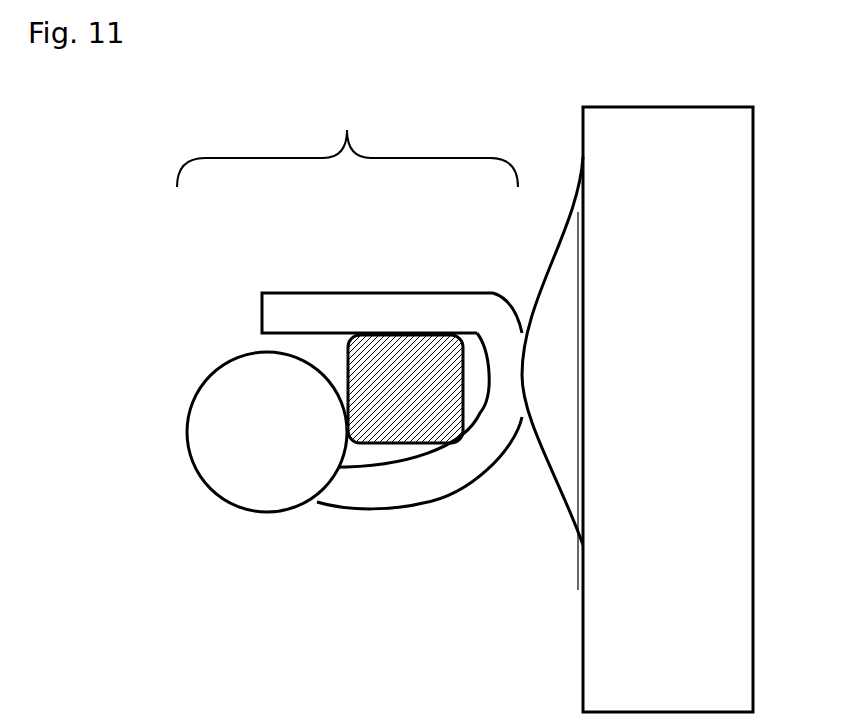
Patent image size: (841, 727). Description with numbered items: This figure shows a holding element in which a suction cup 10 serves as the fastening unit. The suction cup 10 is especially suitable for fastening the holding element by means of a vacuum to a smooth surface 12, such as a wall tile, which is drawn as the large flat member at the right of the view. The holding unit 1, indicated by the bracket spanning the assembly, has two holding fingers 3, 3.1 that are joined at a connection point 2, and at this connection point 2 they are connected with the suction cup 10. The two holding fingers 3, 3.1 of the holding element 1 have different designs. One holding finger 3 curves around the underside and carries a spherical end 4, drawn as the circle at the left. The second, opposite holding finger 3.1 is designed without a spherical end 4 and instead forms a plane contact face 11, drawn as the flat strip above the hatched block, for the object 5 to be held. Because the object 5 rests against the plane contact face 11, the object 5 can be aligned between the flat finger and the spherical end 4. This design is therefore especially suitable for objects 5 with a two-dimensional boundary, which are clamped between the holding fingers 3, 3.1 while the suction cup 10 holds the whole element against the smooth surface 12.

The holding unit 1 is at (347, 142).
The connection point 2 is at (517, 387).
The holding finger 3 is at (435, 480).
The holding finger 3.1 is at (488, 312).
The spherical end 4 is at (277, 507).
The object 5 is at (389, 365).
The suction cup 10 is at (557, 390).
The plane contact face 11 is at (290, 333).
The smooth surface 12 is at (582, 632).